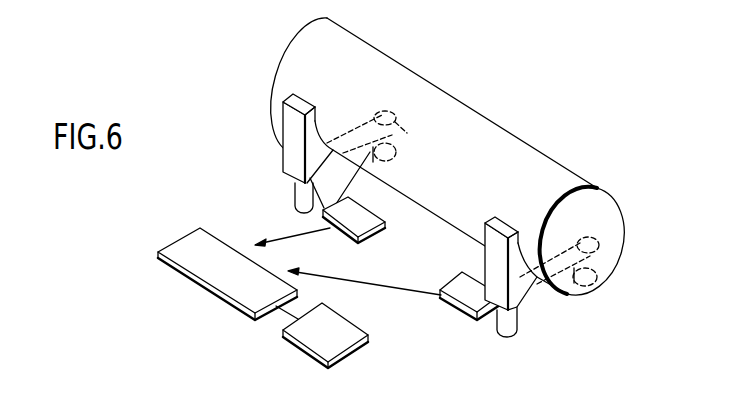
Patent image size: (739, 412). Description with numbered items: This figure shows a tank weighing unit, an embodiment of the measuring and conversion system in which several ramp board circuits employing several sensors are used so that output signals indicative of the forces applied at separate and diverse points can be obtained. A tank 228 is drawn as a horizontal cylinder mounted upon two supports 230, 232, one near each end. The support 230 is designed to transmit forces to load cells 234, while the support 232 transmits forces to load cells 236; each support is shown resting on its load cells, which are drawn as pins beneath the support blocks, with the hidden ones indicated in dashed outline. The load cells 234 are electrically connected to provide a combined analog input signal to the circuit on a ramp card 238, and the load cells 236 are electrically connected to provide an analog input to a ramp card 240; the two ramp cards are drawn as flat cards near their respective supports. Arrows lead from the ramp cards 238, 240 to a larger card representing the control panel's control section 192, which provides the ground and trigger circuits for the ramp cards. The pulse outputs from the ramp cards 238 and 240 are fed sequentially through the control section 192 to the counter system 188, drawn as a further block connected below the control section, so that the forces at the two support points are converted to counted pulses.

The counter system 188 is at (357, 330).
The control section 192 is at (222, 280).
The tank 228 is at (503, 140).
The support 230 is at (530, 296).
The support 232 is at (290, 151).
The load cells 234 is at (600, 265).
The load cells 236 is at (406, 140).
The ramp card 238 is at (467, 276).
The ramp card 240 is at (376, 230).